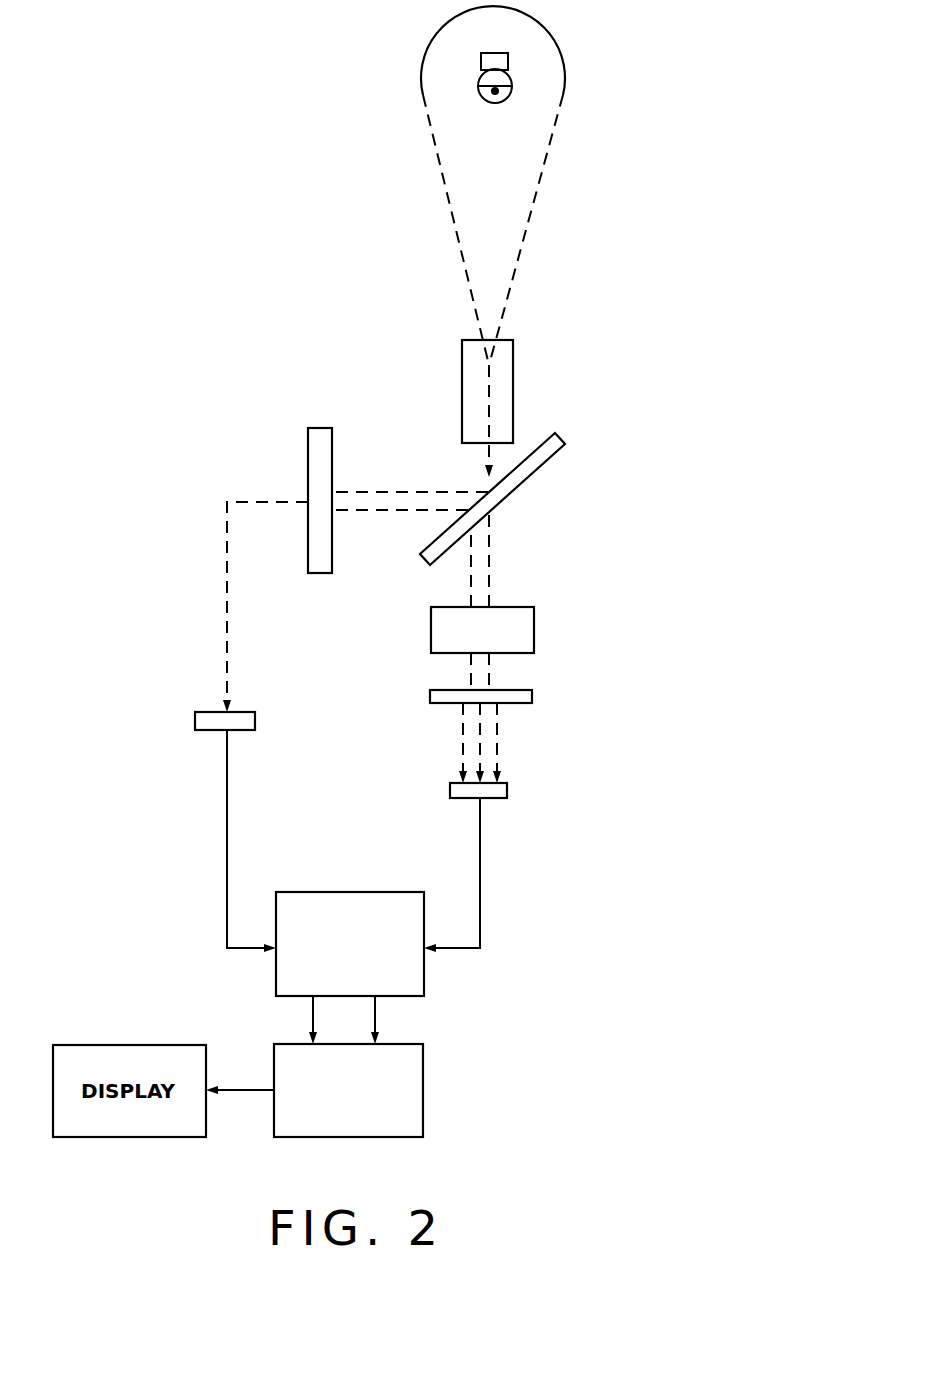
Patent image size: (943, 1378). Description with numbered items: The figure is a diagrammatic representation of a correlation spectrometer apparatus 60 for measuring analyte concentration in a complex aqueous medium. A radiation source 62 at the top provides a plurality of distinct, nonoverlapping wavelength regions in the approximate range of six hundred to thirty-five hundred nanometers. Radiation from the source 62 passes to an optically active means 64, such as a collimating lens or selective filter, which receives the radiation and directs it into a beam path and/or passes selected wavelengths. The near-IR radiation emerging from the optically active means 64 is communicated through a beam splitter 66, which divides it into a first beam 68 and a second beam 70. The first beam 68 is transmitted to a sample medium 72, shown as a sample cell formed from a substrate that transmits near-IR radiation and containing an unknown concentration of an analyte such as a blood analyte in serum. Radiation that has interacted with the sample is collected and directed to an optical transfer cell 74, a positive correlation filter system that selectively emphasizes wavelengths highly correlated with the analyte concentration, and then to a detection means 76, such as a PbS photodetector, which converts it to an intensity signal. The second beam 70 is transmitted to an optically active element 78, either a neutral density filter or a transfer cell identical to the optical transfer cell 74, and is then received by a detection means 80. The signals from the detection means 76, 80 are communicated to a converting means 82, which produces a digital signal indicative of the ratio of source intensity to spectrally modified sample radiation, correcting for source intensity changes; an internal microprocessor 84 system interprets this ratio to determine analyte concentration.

The apparatus 60 is at (166, 349).
The radiation source 62 is at (546, 80).
The optically active means 64 is at (522, 378).
The beam splitter 66 is at (537, 463).
The first beam 68 is at (490, 561).
The second beam 70 is at (384, 489).
The sample medium 72 is at (526, 633).
The optical transfer cell 74 is at (530, 697).
The detection means 76 is at (505, 793).
The optically active element 78 is at (316, 432).
The detection means 80 is at (197, 720).
The converting means 82 is at (318, 892).
The microprocessor 84 is at (425, 1097).